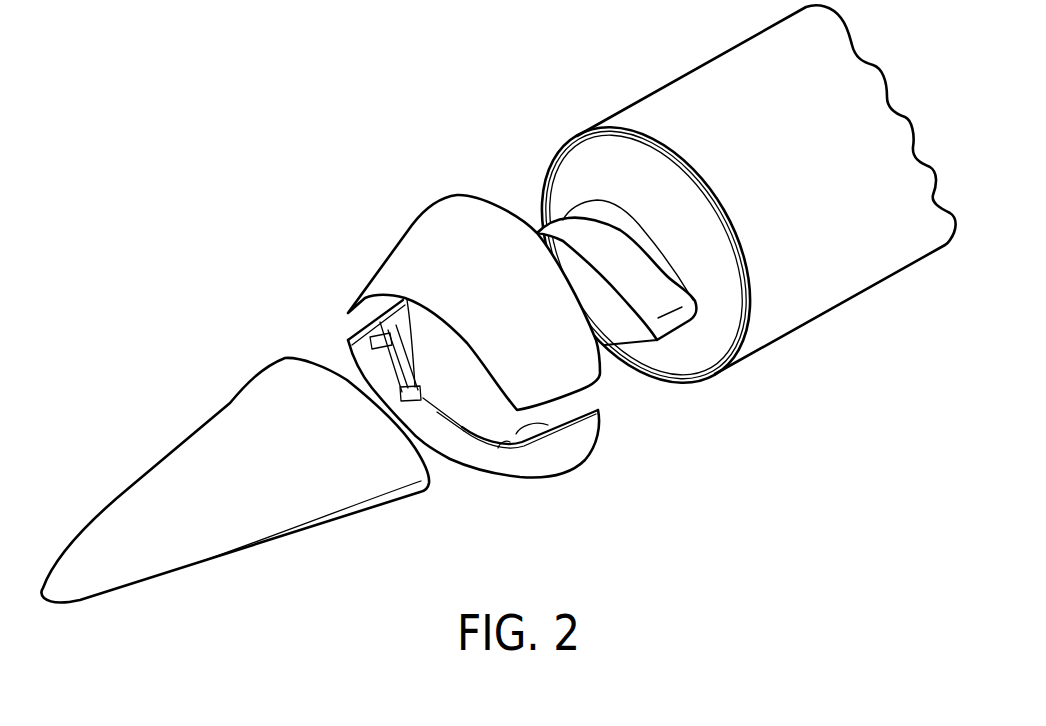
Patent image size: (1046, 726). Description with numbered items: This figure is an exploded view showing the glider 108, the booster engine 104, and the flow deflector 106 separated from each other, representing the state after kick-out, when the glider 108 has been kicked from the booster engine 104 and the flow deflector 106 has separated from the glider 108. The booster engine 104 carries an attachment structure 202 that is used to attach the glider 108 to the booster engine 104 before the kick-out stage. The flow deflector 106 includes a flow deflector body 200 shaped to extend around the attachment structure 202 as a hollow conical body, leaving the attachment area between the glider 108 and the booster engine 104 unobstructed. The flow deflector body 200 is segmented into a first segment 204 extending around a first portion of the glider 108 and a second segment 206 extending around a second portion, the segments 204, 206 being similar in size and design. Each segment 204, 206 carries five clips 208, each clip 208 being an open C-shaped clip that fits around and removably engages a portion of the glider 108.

The booster engine 104 is at (922, 289).
The flow deflector 106 is at (366, 235).
The glider 108 is at (201, 590).
The flow deflector body 200 is at (477, 315).
The attachment structure 202 is at (659, 367).
The first segment 204 is at (619, 392).
The second segment 206 is at (511, 500).
The clip 208 is at (376, 395).